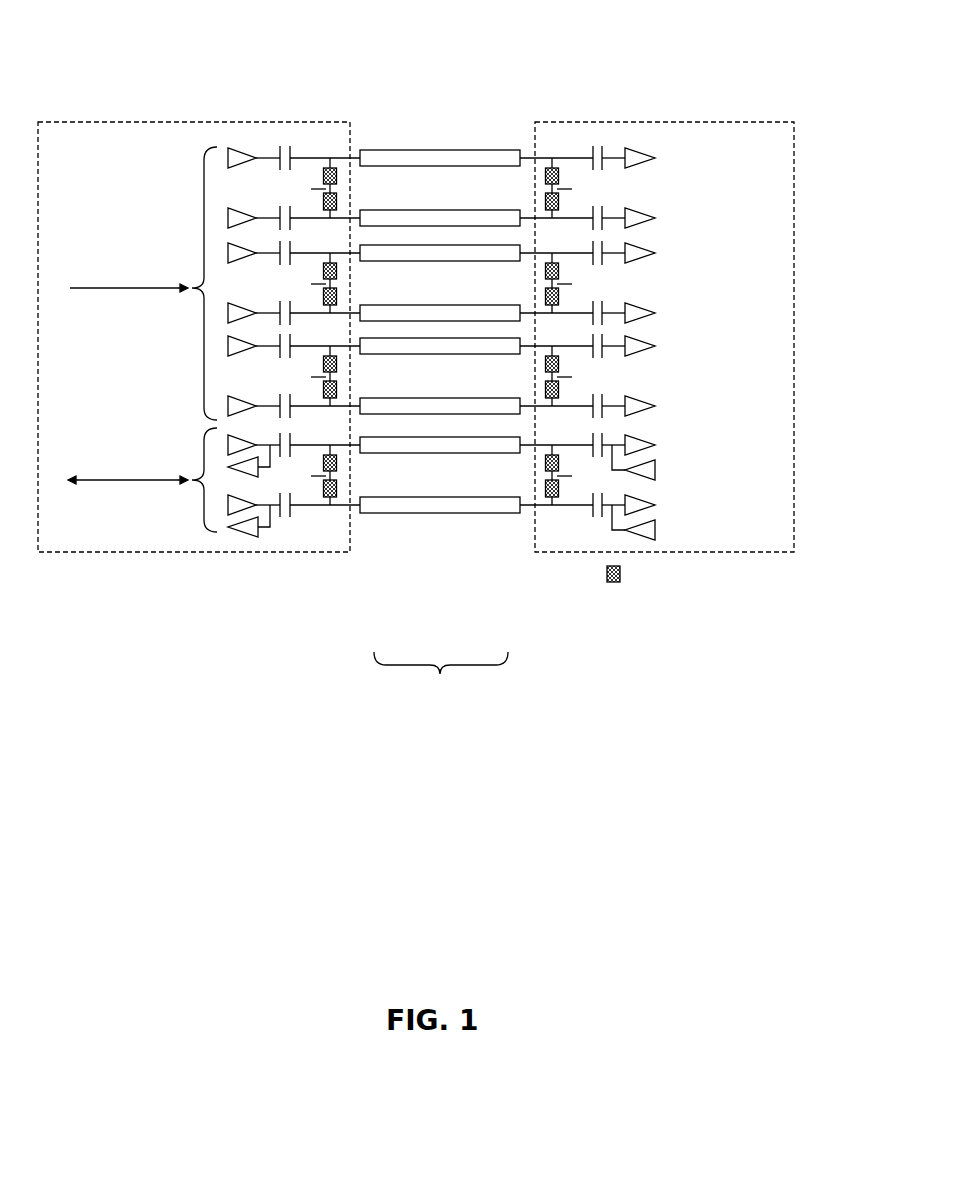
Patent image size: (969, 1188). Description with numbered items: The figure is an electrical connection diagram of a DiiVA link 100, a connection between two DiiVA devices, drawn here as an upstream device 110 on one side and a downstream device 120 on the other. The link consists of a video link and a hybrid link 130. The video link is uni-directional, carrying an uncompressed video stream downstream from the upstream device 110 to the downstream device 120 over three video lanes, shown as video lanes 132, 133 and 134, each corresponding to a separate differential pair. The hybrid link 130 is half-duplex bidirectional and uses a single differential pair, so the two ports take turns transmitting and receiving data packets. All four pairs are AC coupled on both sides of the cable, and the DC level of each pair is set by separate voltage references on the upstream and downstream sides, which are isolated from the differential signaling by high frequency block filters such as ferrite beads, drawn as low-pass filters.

The hybrid link system 100 is at (440, 690).
The upstream device 110 is at (151, 92).
The downstream device 120 is at (660, 97).
The hybrid link 130 is at (468, 452).
The video lane VL0 132 is at (484, 211).
The video lane VL1 133 is at (445, 258).
The video lane VL2 134 is at (399, 350).